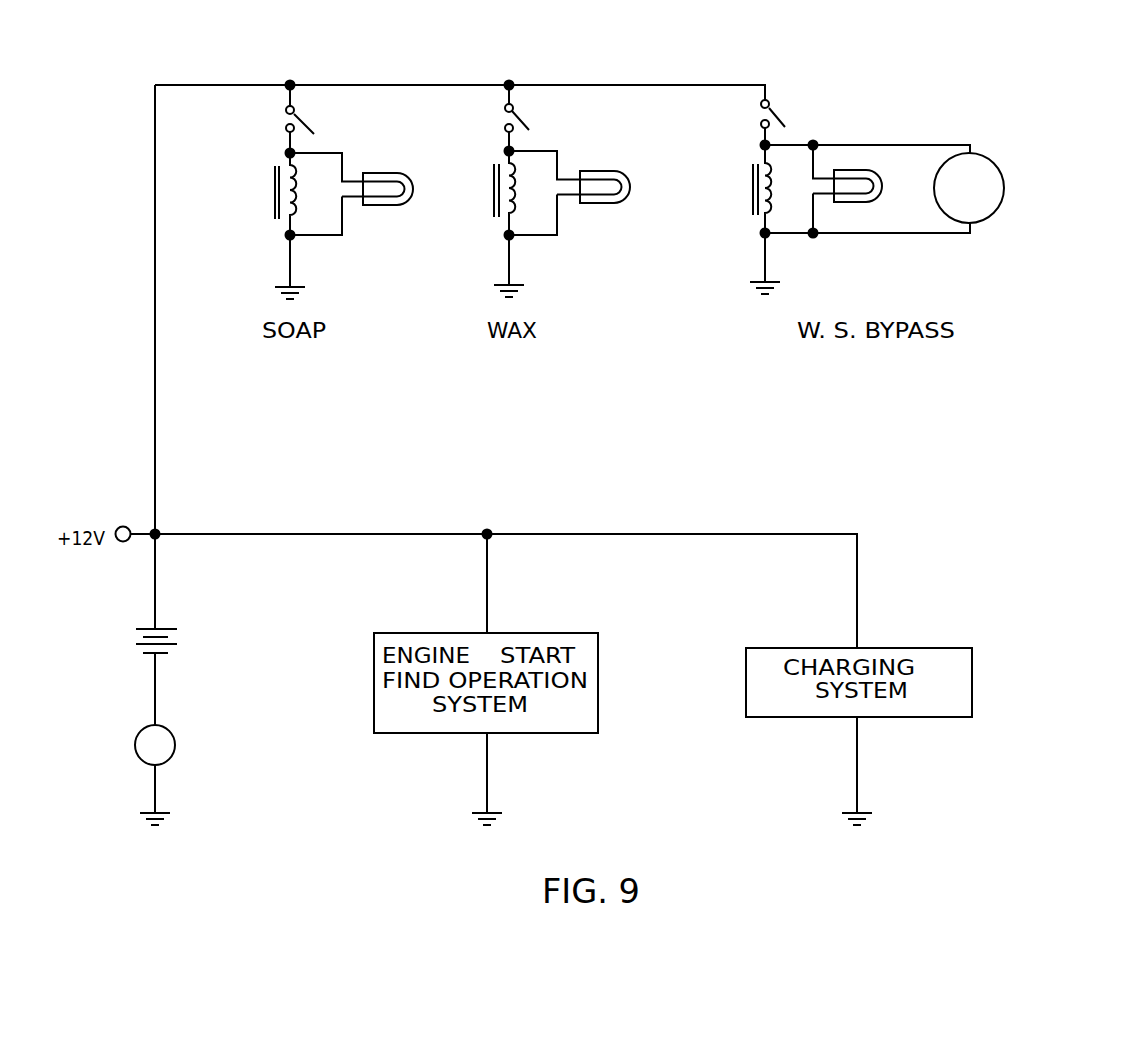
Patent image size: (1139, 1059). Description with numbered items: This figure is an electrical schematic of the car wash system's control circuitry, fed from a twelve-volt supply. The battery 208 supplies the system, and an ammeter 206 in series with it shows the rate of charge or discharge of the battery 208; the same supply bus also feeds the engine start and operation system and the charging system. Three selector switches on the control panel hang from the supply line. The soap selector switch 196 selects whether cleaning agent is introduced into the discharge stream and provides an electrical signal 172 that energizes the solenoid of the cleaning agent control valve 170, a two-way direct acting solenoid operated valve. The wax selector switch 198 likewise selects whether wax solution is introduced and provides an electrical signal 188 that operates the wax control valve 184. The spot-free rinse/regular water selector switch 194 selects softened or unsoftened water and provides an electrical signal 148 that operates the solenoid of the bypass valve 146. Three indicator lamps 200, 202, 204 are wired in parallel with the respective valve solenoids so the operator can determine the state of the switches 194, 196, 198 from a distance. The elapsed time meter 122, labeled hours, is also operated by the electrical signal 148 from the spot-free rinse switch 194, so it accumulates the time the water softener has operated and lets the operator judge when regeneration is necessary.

The elapsed time meter 122 is at (1000, 208).
The bypass valve 146 is at (753, 189).
The electrical signal 148 is at (892, 145).
The cleaning agent control valve 170 is at (275, 195).
The electrical signal 172 is at (342, 162).
The wax control valve 184 is at (494, 190).
The electrical signal 188 is at (557, 157).
The spot-free rinse/regular water selector switch 194 is at (786, 118).
The soap selector switch 196 is at (313, 124).
The wax selector switch 198 is at (525, 122).
The indicator lamp 200 is at (880, 202).
The indicator lamp 202 is at (408, 205).
The indicator lamp 204 is at (620, 203).
The ammeter 206 is at (135, 745).
The battery 208 is at (150, 629).